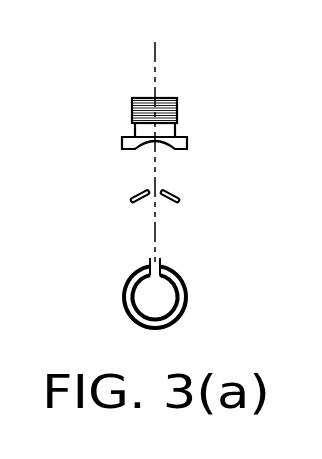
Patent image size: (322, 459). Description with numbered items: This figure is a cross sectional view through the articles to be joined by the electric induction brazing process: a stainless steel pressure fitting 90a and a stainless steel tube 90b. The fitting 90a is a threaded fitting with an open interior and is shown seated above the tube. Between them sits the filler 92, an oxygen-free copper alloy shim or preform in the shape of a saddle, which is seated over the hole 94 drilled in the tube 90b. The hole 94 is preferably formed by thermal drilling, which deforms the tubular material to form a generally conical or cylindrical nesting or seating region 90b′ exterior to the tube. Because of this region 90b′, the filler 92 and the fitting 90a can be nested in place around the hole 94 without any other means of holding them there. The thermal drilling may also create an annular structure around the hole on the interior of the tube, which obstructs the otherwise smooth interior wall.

The pressure fitting 90a is at (165, 131).
The filler 92 is at (131, 200).
The hole 94 is at (150, 259).
The tube 90b is at (185, 295).
The nesting or seating region 90b′ is at (163, 265).